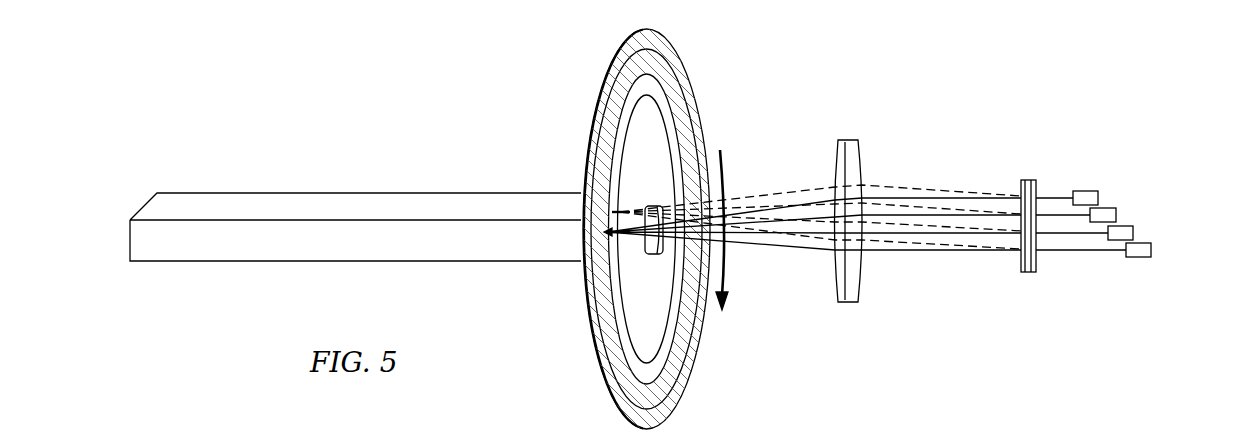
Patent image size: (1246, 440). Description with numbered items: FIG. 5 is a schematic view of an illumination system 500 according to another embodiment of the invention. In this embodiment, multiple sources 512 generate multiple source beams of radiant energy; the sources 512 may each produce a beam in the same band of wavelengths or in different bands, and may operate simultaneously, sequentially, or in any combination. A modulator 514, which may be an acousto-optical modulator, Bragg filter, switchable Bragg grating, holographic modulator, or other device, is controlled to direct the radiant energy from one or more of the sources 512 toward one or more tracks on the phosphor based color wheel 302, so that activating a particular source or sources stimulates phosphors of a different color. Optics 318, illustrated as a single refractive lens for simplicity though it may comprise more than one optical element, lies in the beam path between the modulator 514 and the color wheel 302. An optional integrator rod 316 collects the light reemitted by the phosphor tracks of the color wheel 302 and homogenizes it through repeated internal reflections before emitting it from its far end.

The optical system 500 is at (987, 82).
The phosphor based color wheel 302 is at (691, 86).
The integrator rod 316 is at (321, 201).
The optics 318 is at (848, 139).
The modulator 514 is at (1033, 180).
The sources 512 is at (1085, 191).